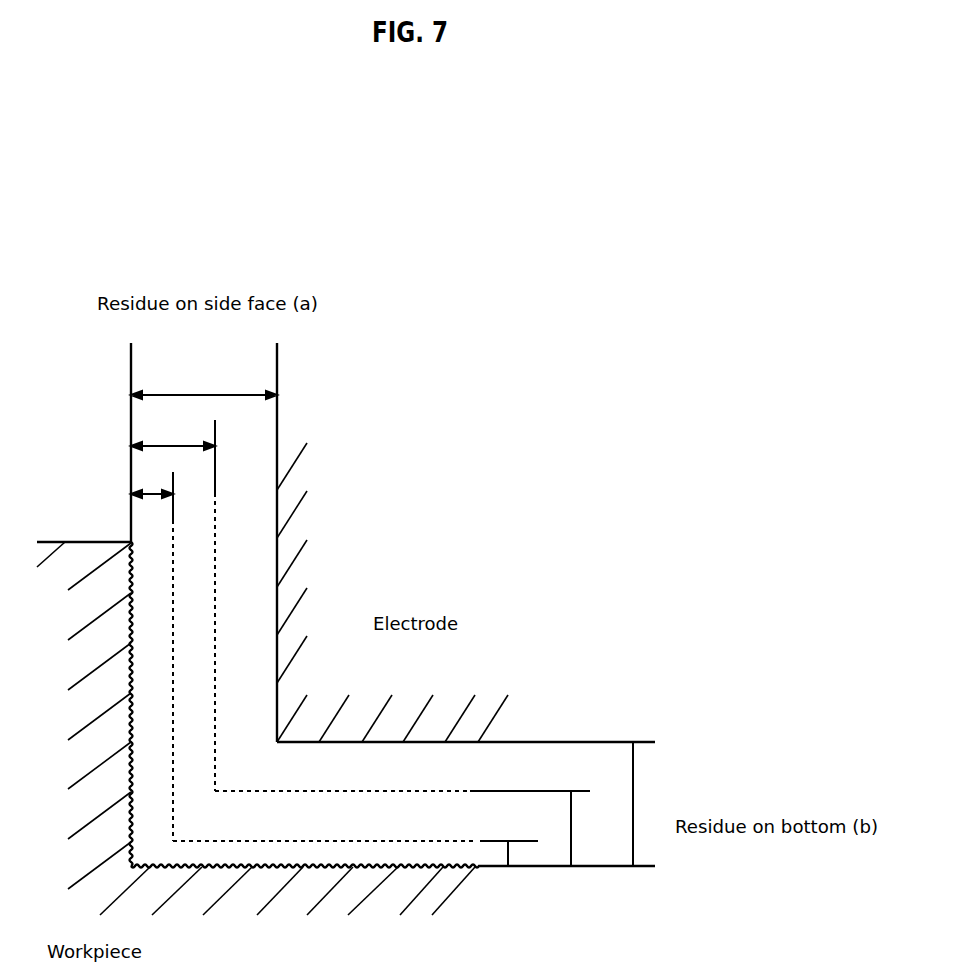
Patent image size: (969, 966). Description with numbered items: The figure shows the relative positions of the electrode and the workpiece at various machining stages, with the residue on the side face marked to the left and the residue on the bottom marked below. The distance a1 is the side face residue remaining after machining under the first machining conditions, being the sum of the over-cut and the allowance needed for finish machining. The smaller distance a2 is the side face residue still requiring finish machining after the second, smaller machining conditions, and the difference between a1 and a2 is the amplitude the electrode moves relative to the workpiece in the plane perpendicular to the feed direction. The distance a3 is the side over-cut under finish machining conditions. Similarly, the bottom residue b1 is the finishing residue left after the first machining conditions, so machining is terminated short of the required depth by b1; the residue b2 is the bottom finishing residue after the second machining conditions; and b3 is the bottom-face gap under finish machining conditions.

The residue on side face after first machining conditions a1 is at (204, 379).
The residue on side face after second machining conditions a2 is at (360, 600).
The over-cut in side direction under finish machining conditions a3 is at (334, 650).
The residue on bottom after first machining conditions b1 is at (652, 804).
The residue on bottom after second machining conditions b2 is at (590, 829).
The gap in bottom direction under finish machining conditions b3 is at (532, 872).